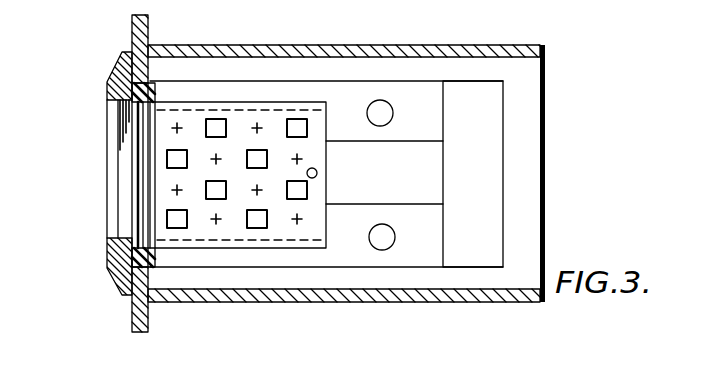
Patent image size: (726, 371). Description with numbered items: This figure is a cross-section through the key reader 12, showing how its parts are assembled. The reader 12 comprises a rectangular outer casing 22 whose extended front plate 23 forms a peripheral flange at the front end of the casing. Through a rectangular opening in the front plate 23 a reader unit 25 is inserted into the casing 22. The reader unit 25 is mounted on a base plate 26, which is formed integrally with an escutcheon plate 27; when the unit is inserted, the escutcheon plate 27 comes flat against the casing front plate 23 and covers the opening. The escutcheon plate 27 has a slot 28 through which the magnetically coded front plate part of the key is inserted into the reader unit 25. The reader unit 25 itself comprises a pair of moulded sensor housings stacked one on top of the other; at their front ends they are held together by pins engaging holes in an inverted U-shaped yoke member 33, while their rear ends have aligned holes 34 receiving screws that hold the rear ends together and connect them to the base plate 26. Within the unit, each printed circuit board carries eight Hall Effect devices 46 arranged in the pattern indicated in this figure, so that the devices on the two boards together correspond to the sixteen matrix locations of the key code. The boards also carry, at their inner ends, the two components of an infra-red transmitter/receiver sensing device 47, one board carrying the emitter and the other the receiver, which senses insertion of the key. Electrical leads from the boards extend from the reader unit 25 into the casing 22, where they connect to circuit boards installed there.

The reader 12 is at (480, 35).
The outer casing 22 is at (308, 50).
The front plate 23 is at (148, 28).
The reader unit 25 is at (516, 98).
The base plate 26 is at (487, 178).
The escutcheon plate 27 is at (122, 78).
The slot 28 is at (112, 207).
The yoke member 33 is at (147, 90).
The holes 34 is at (382, 114).
The Hall Effect devices 46 is at (267, 222).
The infra-red transmitter/receiver sensing device 47 is at (318, 173).